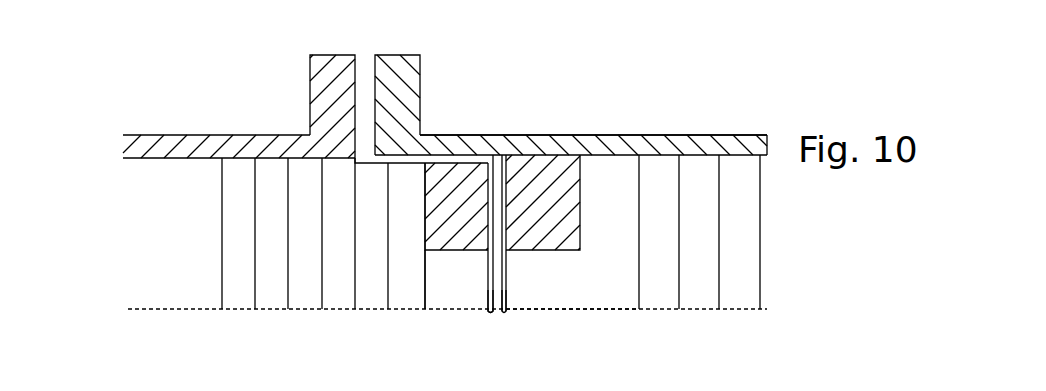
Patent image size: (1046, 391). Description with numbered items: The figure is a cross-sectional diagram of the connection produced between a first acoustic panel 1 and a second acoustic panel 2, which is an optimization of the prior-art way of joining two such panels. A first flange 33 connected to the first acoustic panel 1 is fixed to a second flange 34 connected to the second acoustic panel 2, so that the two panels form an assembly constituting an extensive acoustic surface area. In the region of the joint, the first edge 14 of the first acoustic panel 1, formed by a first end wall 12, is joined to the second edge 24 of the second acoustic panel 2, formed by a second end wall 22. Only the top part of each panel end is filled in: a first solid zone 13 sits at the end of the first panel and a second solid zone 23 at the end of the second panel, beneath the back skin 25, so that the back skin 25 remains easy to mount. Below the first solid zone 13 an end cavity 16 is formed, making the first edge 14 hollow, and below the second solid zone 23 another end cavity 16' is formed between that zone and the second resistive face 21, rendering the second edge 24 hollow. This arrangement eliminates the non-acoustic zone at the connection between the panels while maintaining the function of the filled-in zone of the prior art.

The first acoustic panel 1 is at (135, 248).
The second acoustic panel 2 is at (747, 235).
The first end wall 12 is at (487, 272).
The first solid zone 13 is at (455, 180).
The first edge 14 is at (488, 313).
The end cavity 16 is at (424, 297).
The end cavity 16' is at (572, 323).
The second resistive face 21 is at (593, 67).
The second end wall 22 is at (504, 283).
The second solid zone 23 is at (543, 178).
The second edge 24 is at (505, 312).
The back skin 25 is at (606, 153).
The first flange 33 is at (335, 72).
The second flange 34 is at (407, 72).